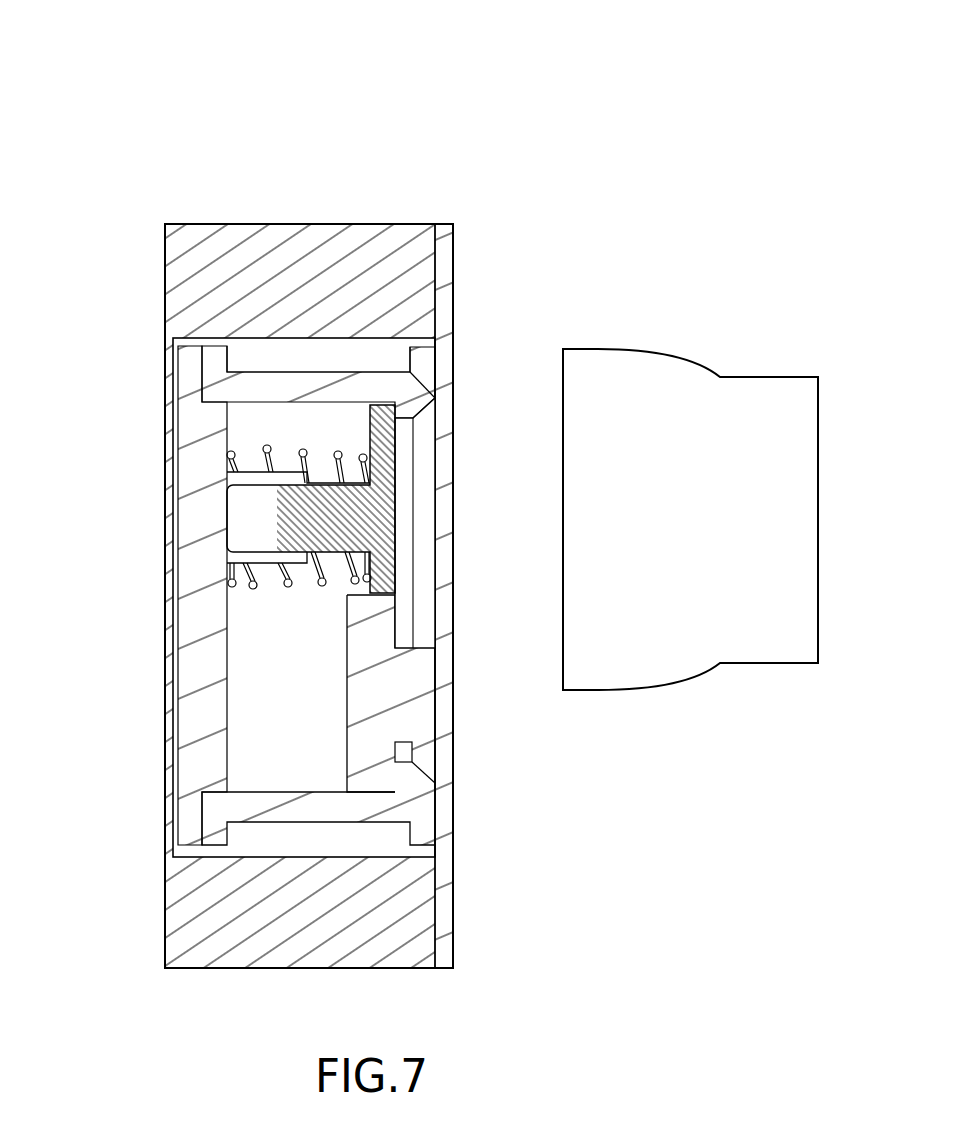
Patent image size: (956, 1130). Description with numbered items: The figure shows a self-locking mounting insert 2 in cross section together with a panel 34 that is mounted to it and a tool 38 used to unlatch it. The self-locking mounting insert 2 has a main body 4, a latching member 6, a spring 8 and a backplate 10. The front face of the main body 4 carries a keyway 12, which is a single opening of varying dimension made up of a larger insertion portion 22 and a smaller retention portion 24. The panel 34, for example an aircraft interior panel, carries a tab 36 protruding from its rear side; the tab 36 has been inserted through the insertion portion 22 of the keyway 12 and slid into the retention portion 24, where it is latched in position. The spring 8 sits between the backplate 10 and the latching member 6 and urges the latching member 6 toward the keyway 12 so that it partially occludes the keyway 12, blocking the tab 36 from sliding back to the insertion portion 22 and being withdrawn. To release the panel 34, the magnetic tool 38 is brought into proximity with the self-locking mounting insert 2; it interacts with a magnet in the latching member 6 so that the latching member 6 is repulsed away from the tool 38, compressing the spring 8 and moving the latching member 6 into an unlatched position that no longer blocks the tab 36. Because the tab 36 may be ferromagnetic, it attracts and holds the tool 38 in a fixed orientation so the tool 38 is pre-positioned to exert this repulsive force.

The self-locking mounting insert 2 is at (446, 127).
The main body 4 is at (432, 351).
The latching member 6 is at (309, 402).
The spring 8 is at (237, 468).
The backplate 10 is at (190, 365).
The keyway 12 is at (465, 582).
The insertion portion 22 is at (413, 494).
The retention portion 24 is at (421, 745).
The panel 34 is at (445, 535).
The tab 36 is at (433, 437).
The tool 38 is at (756, 291).